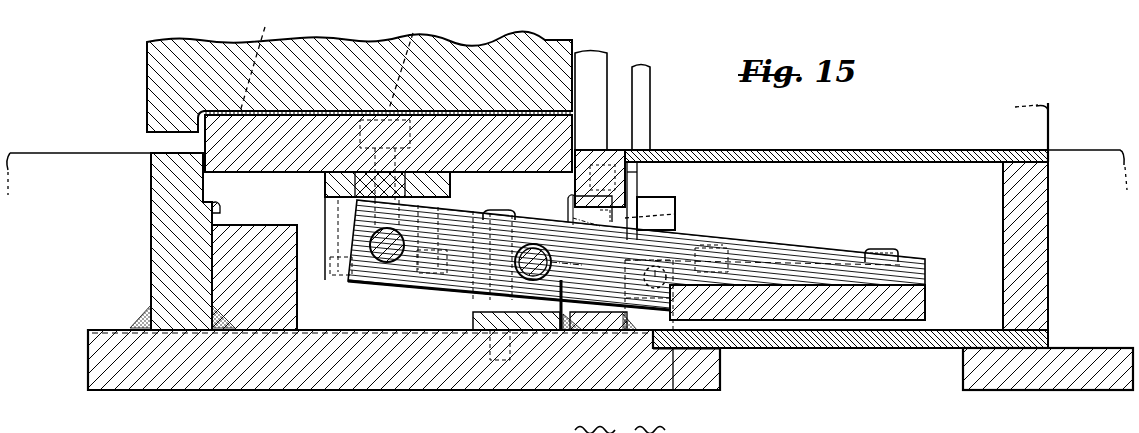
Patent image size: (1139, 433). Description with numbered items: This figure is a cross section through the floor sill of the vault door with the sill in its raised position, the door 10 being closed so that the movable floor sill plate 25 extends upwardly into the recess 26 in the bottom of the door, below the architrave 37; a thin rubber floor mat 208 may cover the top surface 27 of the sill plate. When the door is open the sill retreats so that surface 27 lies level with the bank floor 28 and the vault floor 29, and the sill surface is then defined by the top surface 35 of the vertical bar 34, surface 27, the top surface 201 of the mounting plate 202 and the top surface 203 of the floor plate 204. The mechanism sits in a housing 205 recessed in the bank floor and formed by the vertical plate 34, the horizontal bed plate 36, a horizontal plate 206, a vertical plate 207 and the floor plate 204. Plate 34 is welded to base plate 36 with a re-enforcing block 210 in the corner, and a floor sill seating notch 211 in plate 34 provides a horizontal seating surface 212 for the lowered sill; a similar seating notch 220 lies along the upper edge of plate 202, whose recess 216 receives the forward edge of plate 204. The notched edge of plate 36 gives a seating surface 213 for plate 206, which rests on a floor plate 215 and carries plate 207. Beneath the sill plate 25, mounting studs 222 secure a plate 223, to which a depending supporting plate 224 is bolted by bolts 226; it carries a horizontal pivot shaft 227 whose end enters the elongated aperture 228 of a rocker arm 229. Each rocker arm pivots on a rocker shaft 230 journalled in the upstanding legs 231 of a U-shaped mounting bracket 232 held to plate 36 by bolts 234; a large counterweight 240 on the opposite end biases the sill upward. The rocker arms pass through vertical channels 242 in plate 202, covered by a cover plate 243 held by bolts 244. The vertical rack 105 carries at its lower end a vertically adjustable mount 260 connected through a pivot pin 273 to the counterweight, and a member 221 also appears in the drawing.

The mold block 10 is at (168, 51).
The architrave 37 is at (147, 70).
The thin rubber floor mat 208 is at (260, 61).
The mounting studs 222 is at (408, 64).
The top surface 27 is at (218, 108).
The recess 26 is at (197, 125).
The floor sill seating notch 211 is at (212, 203).
The movable floor sill plate 25 is at (249, 174).
The bank floor 28 is at (58, 146).
The vault floor 29 is at (1087, 158).
The top surface 35 is at (168, 160).
The vertical bar 34 is at (168, 220).
The horizontal seating surface 212 is at (216, 208).
The re-enforcing block 210 is at (320, 290).
The bed plate 36 is at (388, 380).
The mounting plate 202 is at (607, 318).
The seating surface 213 is at (674, 350).
The horizontal plate 206 is at (812, 348).
The floor plate 215 is at (965, 358).
The vertical plate 207 is at (1040, 235).
The top surface 203 is at (806, 151).
The floor plate 204 is at (850, 163).
The vertical rack 105 is at (645, 82).
The top surface 201 is at (590, 150).
The recess 216 is at (606, 153).
The vertical channels 242 is at (632, 206).
The cover plate 243 is at (630, 173).
The vertically adjustable mount 260 is at (678, 229).
The bolts 244 is at (676, 212).
The cup 221 is at (608, 213).
The sill plate seating notch 220 is at (574, 196).
The rocker arm 229 is at (578, 220).
The plate 223 is at (326, 186).
The bolts 226 is at (332, 232).
The depending supporting plate 224 is at (322, 272).
The bolts 234 is at (490, 212).
The elongated aperture 228 is at (378, 252).
The horizontal pivot shaft 227 is at (398, 254).
The rocker shaft 230 is at (552, 262).
The pivot pin 273 is at (649, 287).
The upstanding legs 231 is at (486, 303).
The U-shaped mounting bracket 232 is at (488, 318).
The counterweight 240 is at (926, 300).
The housing 205 is at (740, 394).